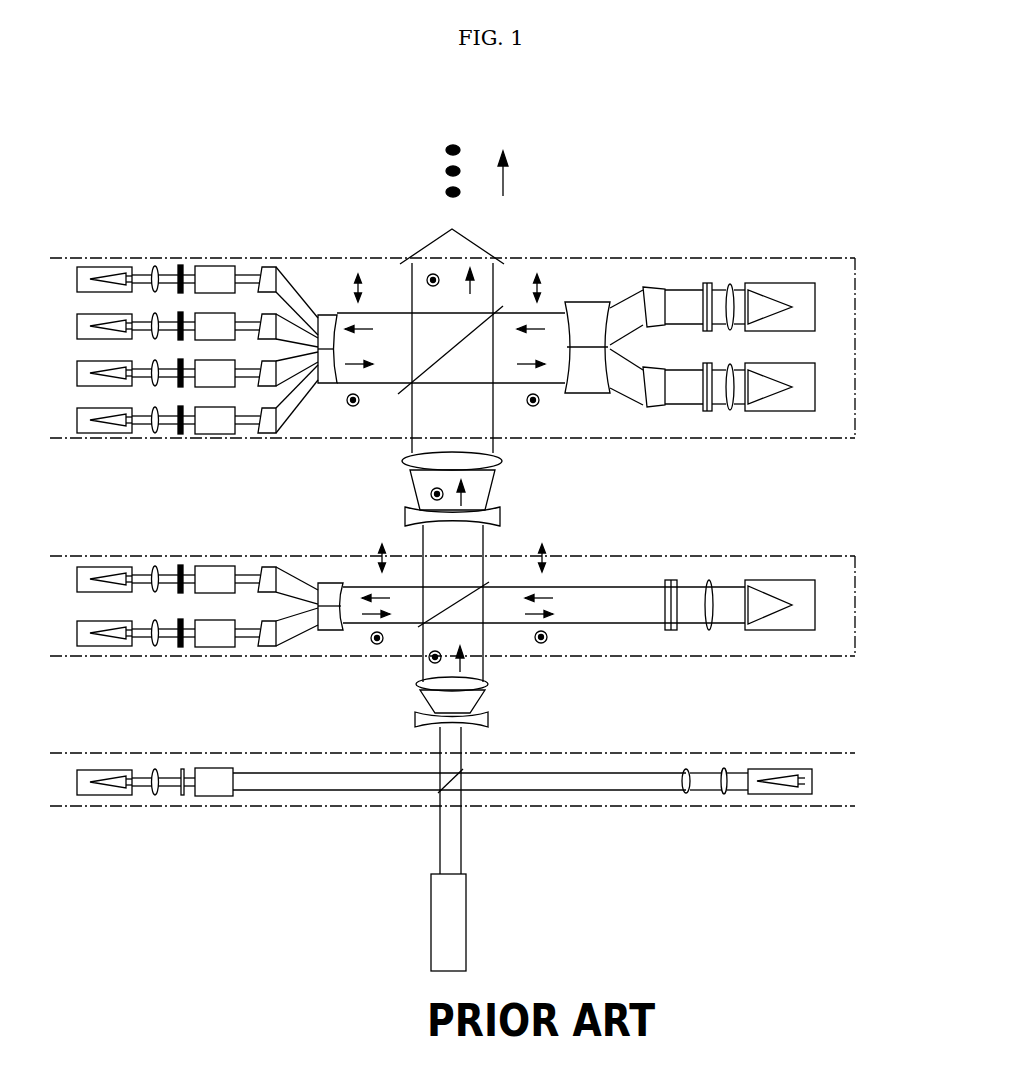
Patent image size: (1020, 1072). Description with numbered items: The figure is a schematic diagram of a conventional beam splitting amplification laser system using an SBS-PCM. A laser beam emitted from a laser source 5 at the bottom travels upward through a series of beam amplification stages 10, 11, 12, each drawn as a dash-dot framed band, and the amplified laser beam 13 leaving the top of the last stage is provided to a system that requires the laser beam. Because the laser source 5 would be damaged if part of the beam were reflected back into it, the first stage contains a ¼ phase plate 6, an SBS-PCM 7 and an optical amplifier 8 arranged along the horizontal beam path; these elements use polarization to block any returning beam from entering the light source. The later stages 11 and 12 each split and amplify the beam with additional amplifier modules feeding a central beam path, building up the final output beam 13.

The laser source 5 is at (468, 931).
The ¼ phase plate 6 is at (686, 768).
The SBS-PCM 7 is at (770, 768).
The optical amplifier 8 is at (218, 768).
The beam amplification stage 10 is at (452, 791).
The beam amplification stage 11 is at (565, 556).
The beam amplification stage 12 is at (563, 258).
The amplified laser beam 13 is at (519, 173).